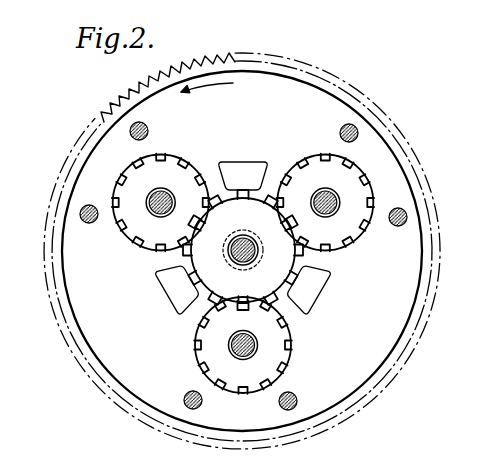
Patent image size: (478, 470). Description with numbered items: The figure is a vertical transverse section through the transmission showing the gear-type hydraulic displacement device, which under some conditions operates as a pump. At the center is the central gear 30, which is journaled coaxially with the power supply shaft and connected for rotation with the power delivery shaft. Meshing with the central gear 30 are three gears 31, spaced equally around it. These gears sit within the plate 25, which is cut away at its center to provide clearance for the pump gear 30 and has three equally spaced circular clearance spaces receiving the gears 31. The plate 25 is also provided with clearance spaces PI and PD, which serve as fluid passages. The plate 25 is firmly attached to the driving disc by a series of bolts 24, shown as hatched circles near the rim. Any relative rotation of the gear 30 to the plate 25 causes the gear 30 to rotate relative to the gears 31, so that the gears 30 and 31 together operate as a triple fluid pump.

The bolts 24 is at (133, 124).
The plate 25 is at (210, 99).
The central gear 30 is at (243, 250).
The gears 31 is at (152, 222).
The clearance space PD is at (265, 195).
The clearance space PI is at (206, 190).